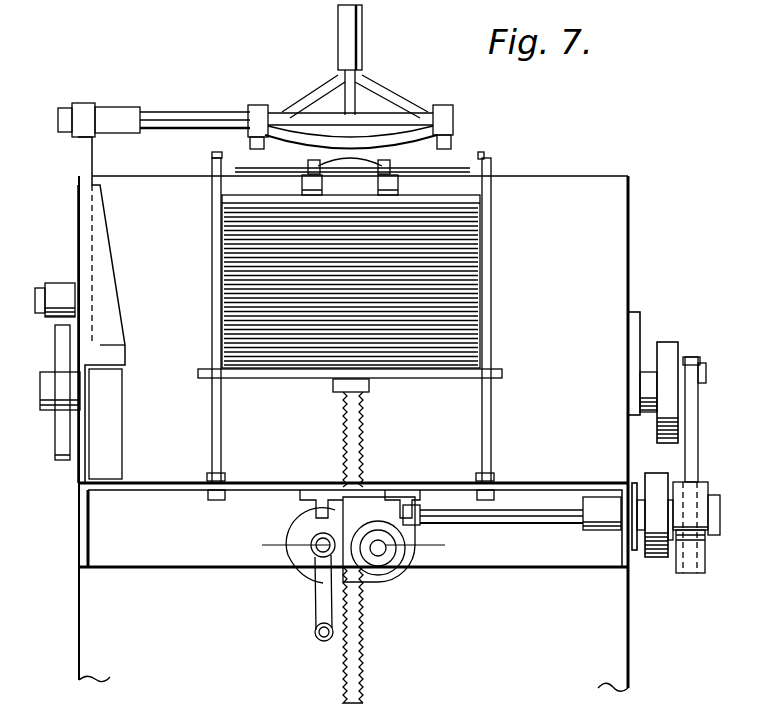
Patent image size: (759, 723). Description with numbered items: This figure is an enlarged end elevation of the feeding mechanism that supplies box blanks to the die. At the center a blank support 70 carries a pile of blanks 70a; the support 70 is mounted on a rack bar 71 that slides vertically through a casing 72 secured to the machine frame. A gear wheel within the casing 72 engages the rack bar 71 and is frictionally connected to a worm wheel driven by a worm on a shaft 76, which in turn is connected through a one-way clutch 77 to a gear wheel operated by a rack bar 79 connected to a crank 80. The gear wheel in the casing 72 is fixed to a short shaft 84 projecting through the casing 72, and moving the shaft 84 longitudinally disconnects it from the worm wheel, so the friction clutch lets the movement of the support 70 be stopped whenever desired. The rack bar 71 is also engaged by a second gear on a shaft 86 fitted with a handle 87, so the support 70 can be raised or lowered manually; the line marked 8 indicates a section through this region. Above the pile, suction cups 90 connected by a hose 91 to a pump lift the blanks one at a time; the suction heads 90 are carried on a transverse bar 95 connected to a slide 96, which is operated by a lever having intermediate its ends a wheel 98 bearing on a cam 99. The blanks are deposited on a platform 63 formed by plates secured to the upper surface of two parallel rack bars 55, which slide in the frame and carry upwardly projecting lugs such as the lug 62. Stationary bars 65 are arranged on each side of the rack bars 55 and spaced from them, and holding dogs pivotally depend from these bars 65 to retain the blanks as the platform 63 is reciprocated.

The section line 8- 8 is at (353, 546).
The rack bars 55 is at (378, 184).
The upwardly projecting lug 62 is at (382, 164).
The platform 63 is at (297, 168).
The stationary bars 65 is at (216, 157).
The blank support 70 is at (410, 378).
The pile of blanks 70a is at (470, 285).
The rack bar 71 is at (362, 655).
The casing 72 is at (380, 578).
The shaft 76 is at (548, 522).
The one-way clutch 77 is at (660, 558).
The rack bar 79 is at (695, 468).
The crank 80 is at (662, 348).
The short shaft 84 is at (384, 552).
The shaft 86 is at (313, 566).
The handle 87 is at (320, 610).
The suction cups 90 is at (248, 128).
The hose 91 is at (345, 20).
The transverse bar 95 is at (152, 122).
The slide 96 is at (92, 176).
The wheel 98 is at (58, 318).
The cam 99 is at (60, 350).